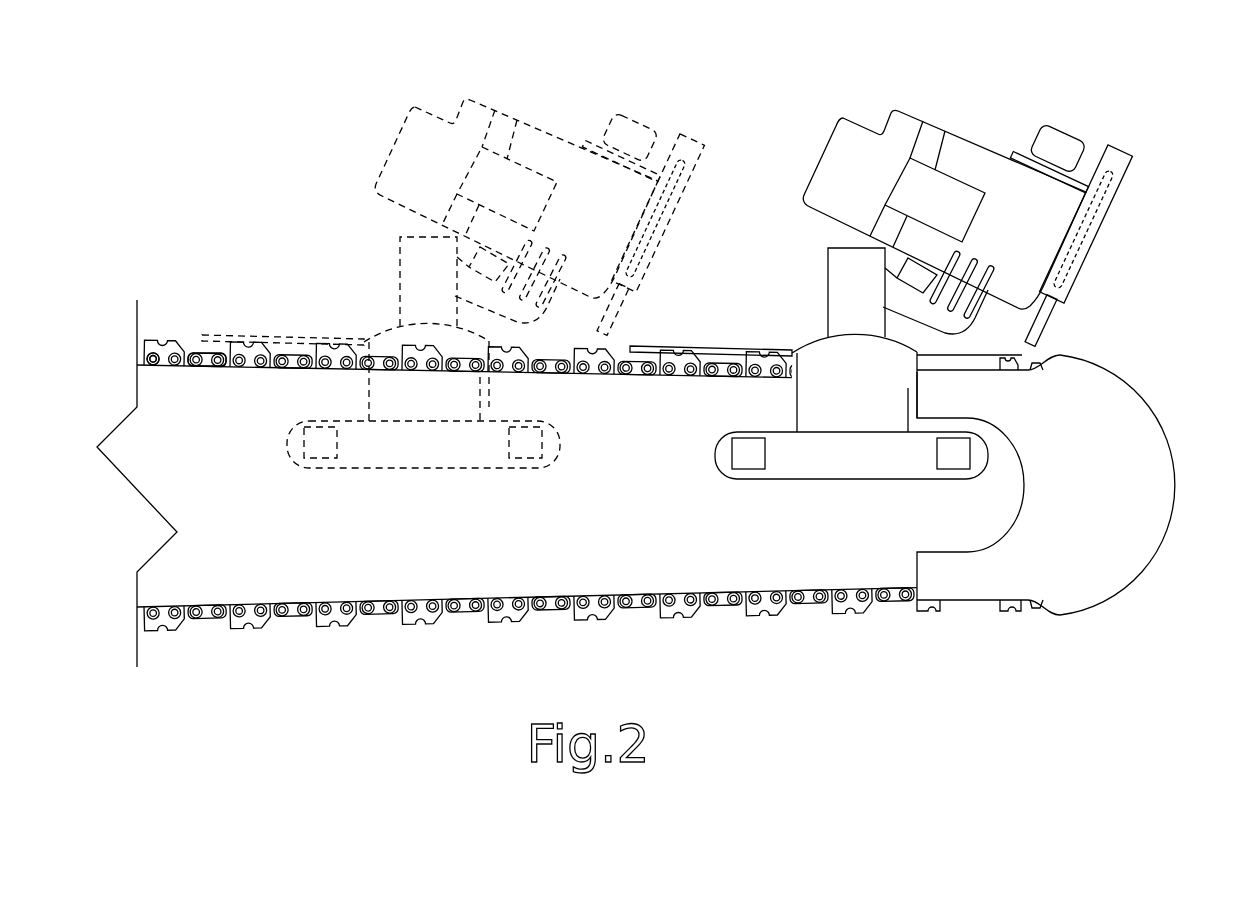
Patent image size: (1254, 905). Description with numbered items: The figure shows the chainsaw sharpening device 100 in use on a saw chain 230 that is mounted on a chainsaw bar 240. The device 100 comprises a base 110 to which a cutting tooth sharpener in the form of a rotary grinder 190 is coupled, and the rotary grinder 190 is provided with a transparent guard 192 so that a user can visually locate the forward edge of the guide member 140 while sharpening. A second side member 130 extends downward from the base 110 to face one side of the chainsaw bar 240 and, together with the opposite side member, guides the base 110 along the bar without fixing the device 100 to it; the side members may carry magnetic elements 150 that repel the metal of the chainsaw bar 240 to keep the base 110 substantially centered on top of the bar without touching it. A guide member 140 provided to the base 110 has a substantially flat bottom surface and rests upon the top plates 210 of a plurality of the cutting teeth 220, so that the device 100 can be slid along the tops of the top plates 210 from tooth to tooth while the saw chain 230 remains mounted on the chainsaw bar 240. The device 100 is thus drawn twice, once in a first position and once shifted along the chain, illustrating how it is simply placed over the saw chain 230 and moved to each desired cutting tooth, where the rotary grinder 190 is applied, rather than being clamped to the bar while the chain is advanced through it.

The chainsaw sharpening device 100 is at (813, 273).
The base 110 is at (807, 413).
The second side member 130 is at (420, 450).
The guide member 140 is at (717, 347).
The magnetic elements 150 is at (312, 448).
The rotary grinder 190 is at (1047, 323).
The transparent guard 192 is at (1120, 162).
The top plates 210 is at (163, 340).
The cutting teeth 220 is at (159, 366).
The saw chain 230 is at (207, 364).
The chainsaw bar 240 is at (640, 567).